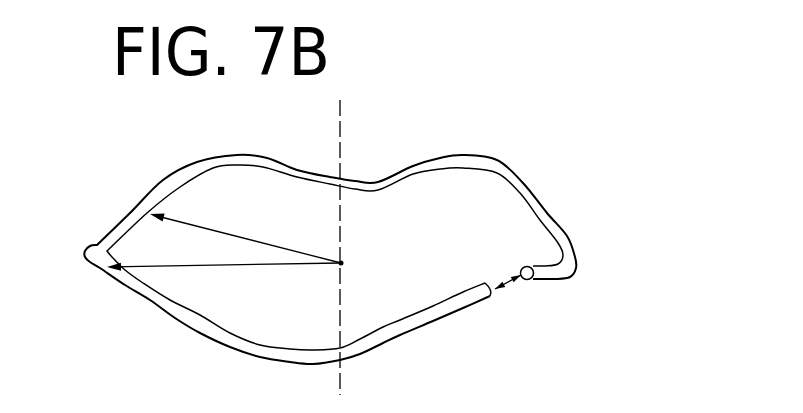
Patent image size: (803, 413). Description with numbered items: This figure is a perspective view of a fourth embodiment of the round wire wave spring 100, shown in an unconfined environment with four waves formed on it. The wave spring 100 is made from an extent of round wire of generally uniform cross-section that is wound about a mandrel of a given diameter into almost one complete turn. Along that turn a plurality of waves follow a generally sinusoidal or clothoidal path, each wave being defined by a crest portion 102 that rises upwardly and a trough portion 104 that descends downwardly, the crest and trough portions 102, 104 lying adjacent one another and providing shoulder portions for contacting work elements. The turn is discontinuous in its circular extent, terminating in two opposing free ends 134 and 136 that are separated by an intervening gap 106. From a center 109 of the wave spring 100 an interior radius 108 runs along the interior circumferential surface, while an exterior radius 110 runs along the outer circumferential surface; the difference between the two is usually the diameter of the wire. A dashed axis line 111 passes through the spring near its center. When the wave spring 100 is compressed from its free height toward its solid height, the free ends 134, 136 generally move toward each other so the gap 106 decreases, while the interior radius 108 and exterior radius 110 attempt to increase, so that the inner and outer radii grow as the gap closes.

The round wire wave spring 100 is at (351, 257).
The crest portion 102 is at (200, 160).
The trough portion 104 is at (372, 180).
The gap 106 is at (512, 274).
The interior radius 108 is at (214, 228).
The center 109 is at (343, 260).
The exterior radius 110 is at (213, 268).
The center axis line 111 is at (358, 141).
The free end 134 is at (488, 298).
The free end 136 is at (531, 281).